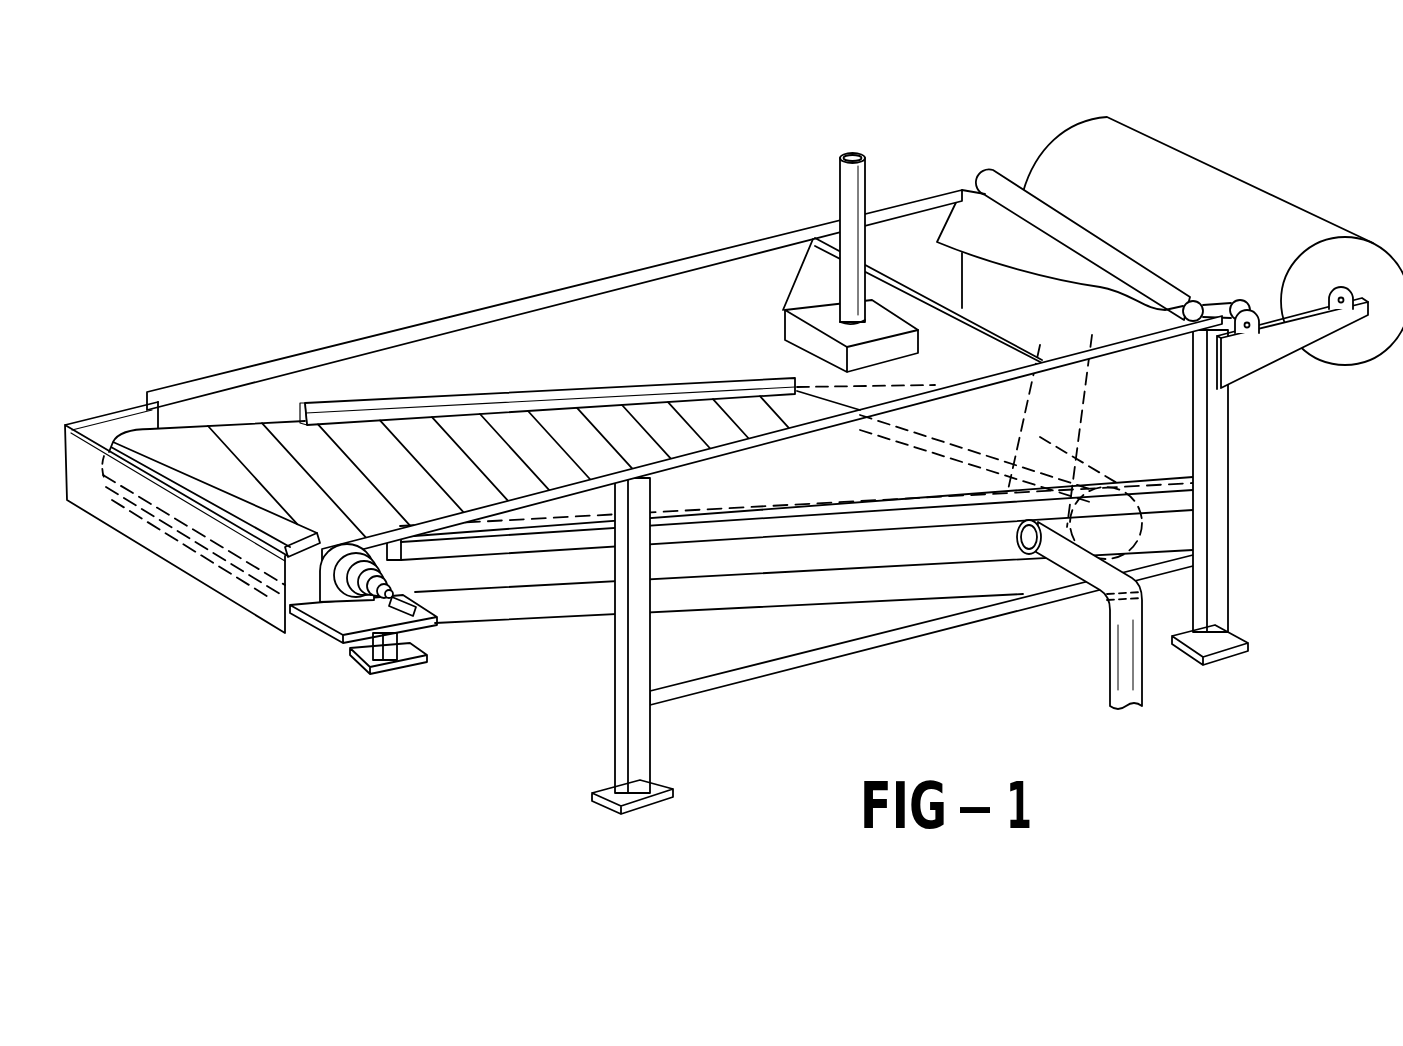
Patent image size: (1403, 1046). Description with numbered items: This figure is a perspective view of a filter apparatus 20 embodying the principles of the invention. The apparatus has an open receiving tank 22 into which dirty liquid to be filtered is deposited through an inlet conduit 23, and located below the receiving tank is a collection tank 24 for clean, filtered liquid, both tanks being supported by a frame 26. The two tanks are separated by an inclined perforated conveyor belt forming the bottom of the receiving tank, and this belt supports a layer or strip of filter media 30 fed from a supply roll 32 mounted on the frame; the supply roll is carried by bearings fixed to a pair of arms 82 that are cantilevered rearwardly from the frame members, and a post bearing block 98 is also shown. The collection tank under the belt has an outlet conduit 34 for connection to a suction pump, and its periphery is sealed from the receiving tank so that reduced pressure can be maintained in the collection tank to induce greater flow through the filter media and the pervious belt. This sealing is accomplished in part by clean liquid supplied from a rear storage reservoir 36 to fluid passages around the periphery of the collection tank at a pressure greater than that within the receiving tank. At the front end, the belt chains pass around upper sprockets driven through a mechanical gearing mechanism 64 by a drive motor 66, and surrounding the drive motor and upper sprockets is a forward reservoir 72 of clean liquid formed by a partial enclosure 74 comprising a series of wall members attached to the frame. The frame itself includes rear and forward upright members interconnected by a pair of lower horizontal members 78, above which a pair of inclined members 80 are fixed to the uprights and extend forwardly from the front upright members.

The filter apparatus 20 is at (1240, 540).
The receiving tank 22 is at (604, 363).
The inlet conduit 23 is at (838, 188).
The collection tank 24 is at (812, 545).
The frame 26 is at (1233, 465).
The filter media 30 is at (1030, 170).
The supply roll 32 is at (1207, 173).
The outlet conduit 34 is at (1113, 690).
The rear storage reservoir 36 is at (1037, 329).
The mechanical gearing mechanism 64 is at (328, 598).
The drive motor 66 is at (353, 597).
The forward reservoir 72 is at (117, 430).
The partial enclosure 74 is at (202, 573).
The lower horizontal members 78 is at (820, 675).
The inclined members 80 is at (558, 546).
The arms 82 is at (1263, 363).
The post bearing block 98 is at (932, 361).